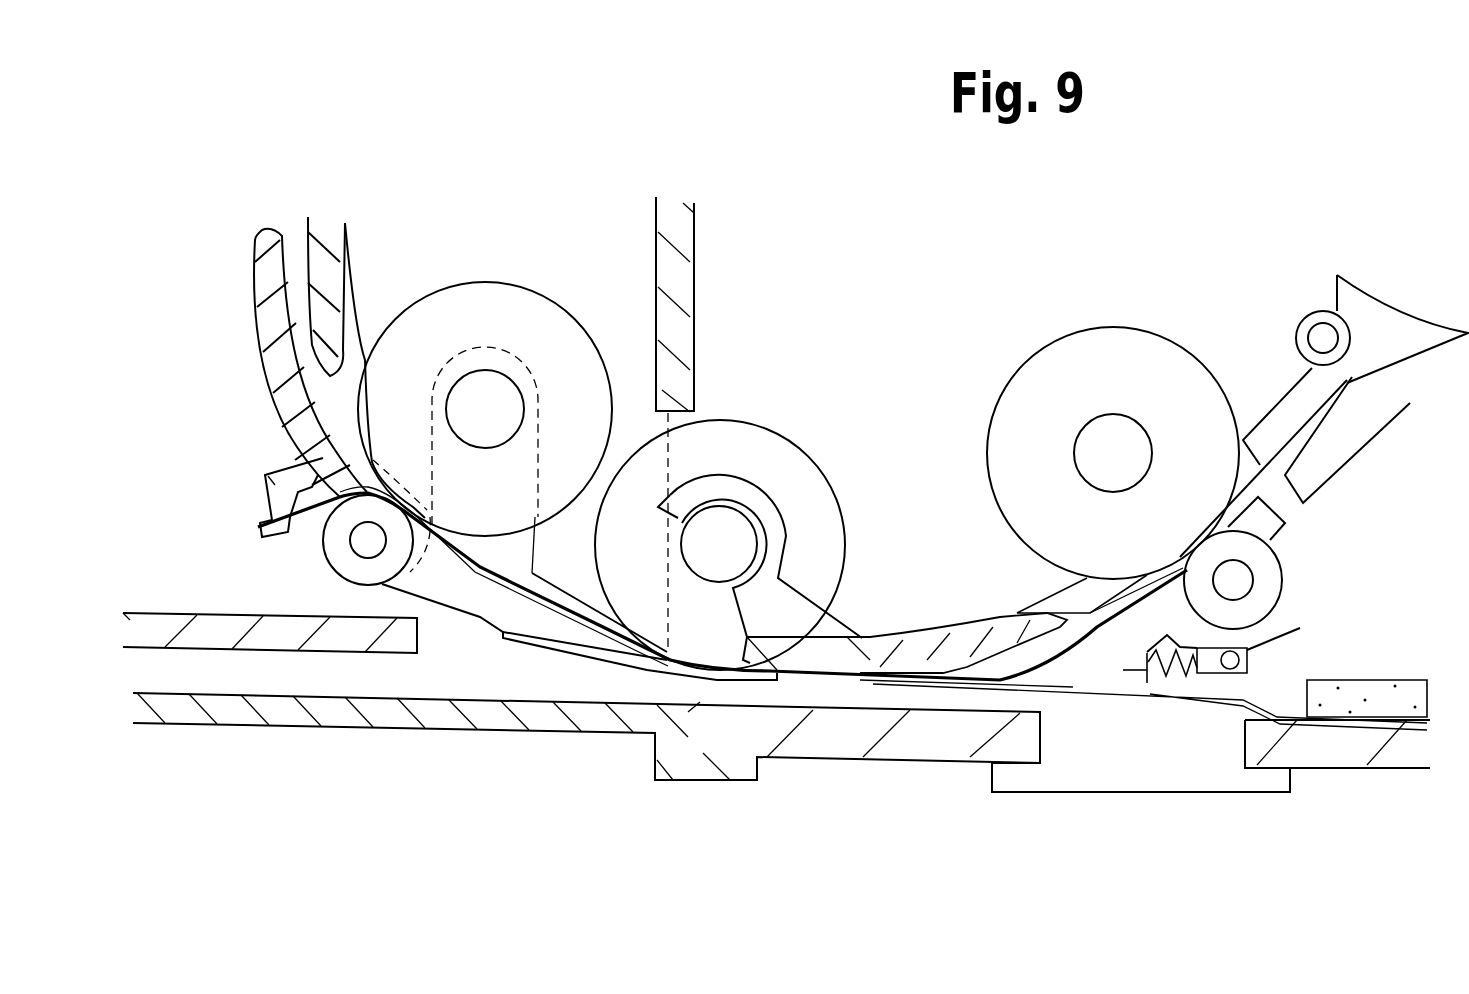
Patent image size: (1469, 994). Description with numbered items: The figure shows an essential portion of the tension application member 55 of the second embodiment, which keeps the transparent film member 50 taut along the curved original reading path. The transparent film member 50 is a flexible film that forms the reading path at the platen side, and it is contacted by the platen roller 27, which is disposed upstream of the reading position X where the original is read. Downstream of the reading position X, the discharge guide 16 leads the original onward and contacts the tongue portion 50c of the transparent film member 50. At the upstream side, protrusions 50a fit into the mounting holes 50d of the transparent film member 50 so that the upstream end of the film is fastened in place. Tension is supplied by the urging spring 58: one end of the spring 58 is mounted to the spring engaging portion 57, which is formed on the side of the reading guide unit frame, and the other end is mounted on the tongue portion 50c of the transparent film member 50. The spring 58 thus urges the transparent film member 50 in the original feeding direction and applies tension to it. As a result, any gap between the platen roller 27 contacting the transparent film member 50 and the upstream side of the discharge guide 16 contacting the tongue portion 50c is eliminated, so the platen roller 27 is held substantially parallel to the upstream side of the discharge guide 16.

The platen roller 27 is at (760, 447).
The discharge guide 16 is at (1113, 643).
The transparent film member 50 is at (480, 610).
The protrusions 50a is at (266, 474).
The tongue portion 50c is at (1145, 674).
The mounting holes 50d is at (292, 523).
The tension application member 55 is at (1302, 657).
The spring engaging portion 57 is at (1263, 637).
The urging spring 58 is at (1182, 675).
The reading position X is at (828, 660).